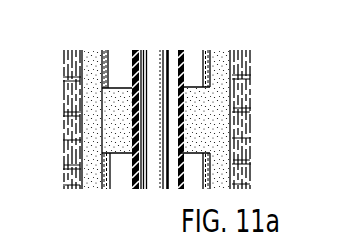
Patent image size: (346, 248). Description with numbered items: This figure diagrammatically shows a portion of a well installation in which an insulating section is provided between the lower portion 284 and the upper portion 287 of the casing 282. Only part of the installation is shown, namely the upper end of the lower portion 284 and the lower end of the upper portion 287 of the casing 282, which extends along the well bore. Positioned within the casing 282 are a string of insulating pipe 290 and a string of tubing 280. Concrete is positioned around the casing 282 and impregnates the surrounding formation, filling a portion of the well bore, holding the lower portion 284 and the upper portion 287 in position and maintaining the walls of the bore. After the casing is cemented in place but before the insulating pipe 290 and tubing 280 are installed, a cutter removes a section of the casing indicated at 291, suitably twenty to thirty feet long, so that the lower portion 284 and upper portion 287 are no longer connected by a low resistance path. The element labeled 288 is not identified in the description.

The tubing 280 is at (186, 53).
The casing 282 is at (252, 105).
The lower portion of the casing 284 is at (108, 190).
The upper portion of the casing 287 is at (112, 54).
The wooden side wall 288 is at (90, 63).
The insulating pipe 290 is at (245, 38).
The removed section of casing 291 is at (117, 119).